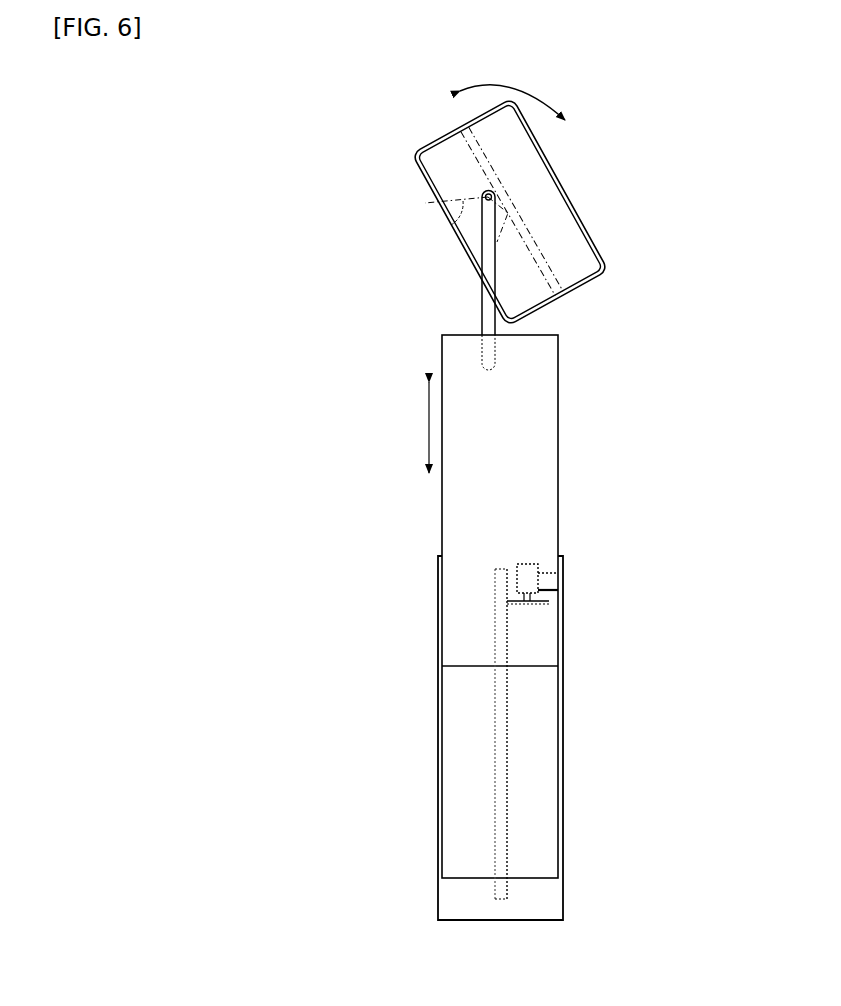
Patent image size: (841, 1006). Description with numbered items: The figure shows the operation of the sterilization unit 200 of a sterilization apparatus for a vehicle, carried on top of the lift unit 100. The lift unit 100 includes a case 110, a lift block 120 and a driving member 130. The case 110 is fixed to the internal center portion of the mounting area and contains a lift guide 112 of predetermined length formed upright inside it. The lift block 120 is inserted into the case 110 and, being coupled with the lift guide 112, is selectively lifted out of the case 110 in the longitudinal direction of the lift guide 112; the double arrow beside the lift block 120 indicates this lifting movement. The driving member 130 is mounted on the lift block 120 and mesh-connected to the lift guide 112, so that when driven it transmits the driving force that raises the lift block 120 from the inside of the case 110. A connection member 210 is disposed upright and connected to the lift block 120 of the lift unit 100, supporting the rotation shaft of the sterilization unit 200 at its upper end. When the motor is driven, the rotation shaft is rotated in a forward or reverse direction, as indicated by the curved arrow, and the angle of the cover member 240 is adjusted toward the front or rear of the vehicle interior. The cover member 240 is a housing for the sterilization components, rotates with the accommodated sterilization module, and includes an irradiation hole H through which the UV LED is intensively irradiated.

The lift unit 100 is at (473, 556).
The case 110 is at (437, 808).
The lift guide 112 is at (498, 691).
The lift block 120 is at (558, 402).
The driving member 130 is at (527, 563).
The sterilization unit 200 is at (506, 187).
The connection member 210 is at (487, 313).
The cover member 240 is at (443, 139).
The irradiation hole H is at (447, 221).